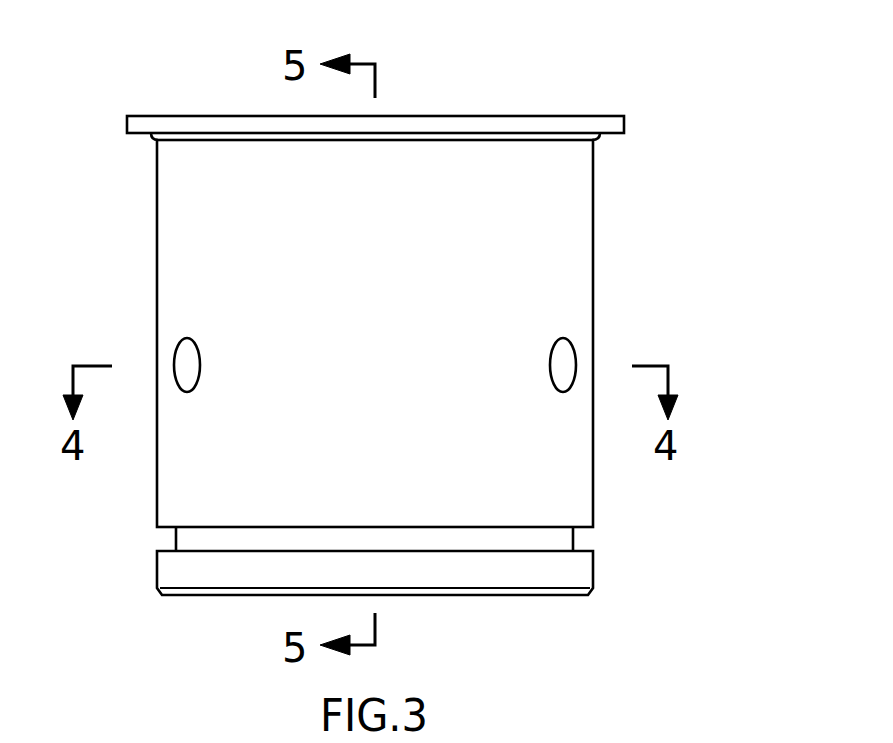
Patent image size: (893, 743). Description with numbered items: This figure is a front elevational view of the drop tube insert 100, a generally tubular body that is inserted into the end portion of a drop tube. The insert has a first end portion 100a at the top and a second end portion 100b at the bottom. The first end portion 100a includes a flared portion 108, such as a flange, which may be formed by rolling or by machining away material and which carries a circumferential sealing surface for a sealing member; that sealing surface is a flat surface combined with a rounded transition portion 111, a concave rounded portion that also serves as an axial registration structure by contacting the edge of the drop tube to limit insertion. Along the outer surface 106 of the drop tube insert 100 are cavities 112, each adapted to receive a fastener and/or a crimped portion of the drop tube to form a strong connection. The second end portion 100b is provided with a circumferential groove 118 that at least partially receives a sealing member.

The drop tube insert 100 is at (485, 81).
The first end portion 100a is at (648, 126).
The second end portion 100b is at (609, 573).
The outer surface 106 is at (508, 241).
The flared portion 108 is at (582, 117).
The transition portion 111 is at (153, 135).
The cavity 112 is at (562, 391).
The circumferential groove 118 is at (592, 550).